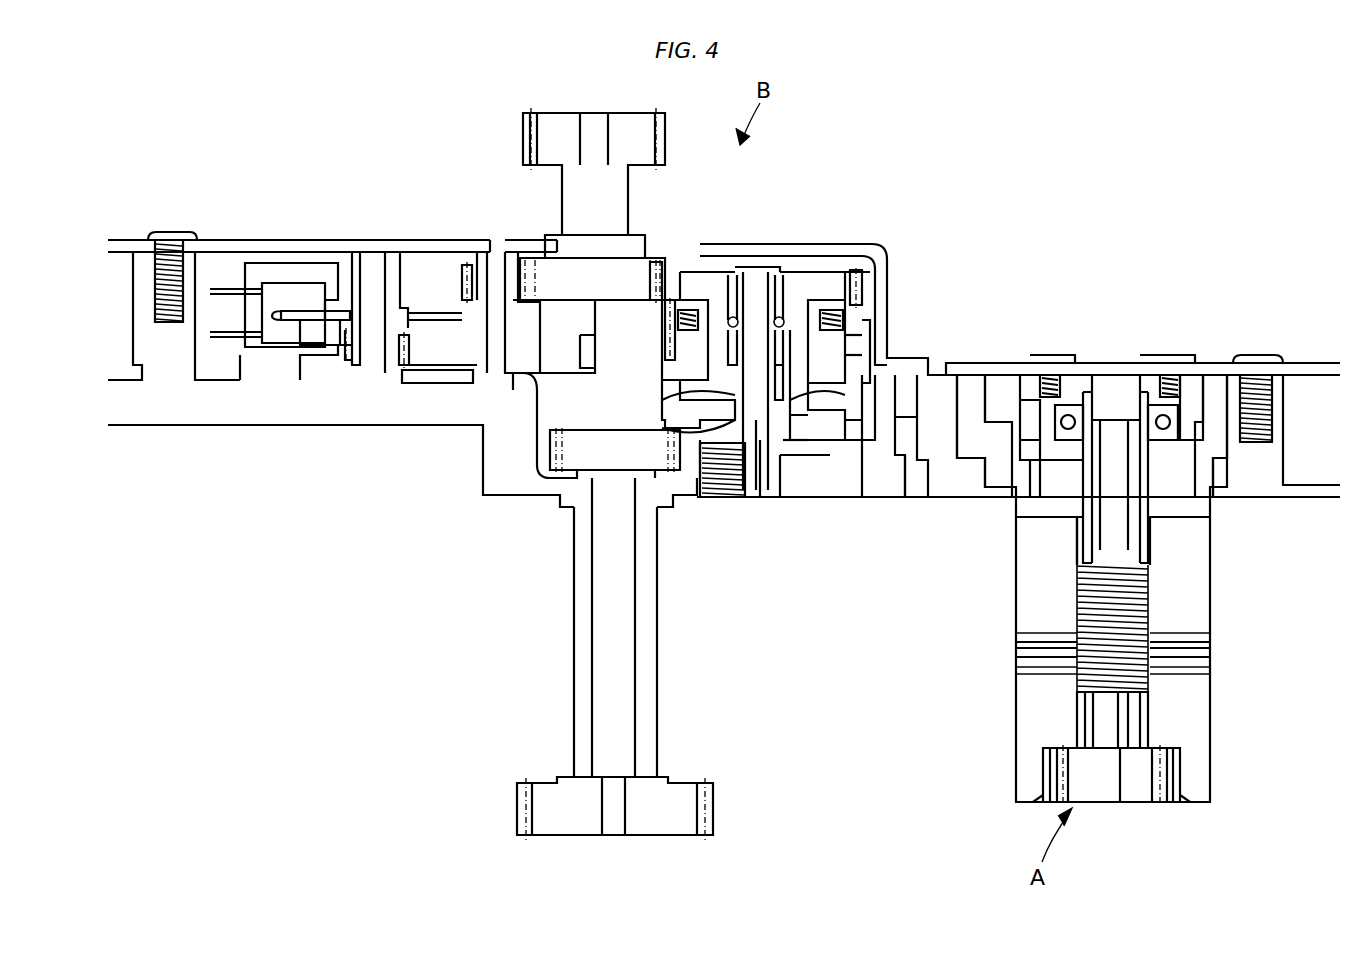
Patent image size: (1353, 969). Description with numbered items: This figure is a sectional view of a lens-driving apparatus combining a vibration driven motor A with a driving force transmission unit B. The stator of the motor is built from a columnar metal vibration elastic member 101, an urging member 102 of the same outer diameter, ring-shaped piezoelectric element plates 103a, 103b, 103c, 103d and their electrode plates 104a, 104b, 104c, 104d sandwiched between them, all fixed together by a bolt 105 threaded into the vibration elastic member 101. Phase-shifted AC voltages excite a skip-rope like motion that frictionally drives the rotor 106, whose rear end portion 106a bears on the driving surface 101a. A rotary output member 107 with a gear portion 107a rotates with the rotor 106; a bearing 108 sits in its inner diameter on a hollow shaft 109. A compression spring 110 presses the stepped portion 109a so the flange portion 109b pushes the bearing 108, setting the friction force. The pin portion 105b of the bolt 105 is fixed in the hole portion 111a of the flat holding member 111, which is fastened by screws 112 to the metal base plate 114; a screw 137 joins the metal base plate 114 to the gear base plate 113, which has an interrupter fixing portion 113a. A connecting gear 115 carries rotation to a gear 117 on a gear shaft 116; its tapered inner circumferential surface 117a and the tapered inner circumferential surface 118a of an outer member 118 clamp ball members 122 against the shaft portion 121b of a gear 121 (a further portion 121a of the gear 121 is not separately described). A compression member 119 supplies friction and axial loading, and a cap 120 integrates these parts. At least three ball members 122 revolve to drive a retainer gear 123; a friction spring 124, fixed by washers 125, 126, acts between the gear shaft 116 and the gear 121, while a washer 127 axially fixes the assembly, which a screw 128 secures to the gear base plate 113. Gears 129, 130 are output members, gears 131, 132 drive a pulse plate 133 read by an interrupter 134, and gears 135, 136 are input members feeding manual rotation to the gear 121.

The vibration elastic member 101 is at (1030, 610).
The driving surface 101a is at (1195, 500).
The urging member 102 is at (1030, 745).
The piezoelectric element plate 103a is at (1016, 642).
The piezoelectric element plate 103b is at (1016, 650).
The piezoelectric element plate 103c is at (1016, 660).
The piezoelectric element plate 103d is at (1016, 670).
The electrode plate 104a is at (1210, 642).
The electrode plate 104b is at (1210, 650).
The electrode plate 104c is at (1210, 658).
The electrode plate 104d is at (1210, 668).
The bolt 105 is at (1135, 792).
The pin portion 105b is at (1110, 385).
The rotor 106 is at (1025, 455).
The rear end portion 106a is at (1044, 500).
The rotary output member 107 is at (1045, 398).
The gear portion 107a is at (1035, 420).
The bearing 108 is at (1165, 428).
The hollow shaft 109 is at (1145, 505).
The stepped portion 109a is at (1077, 520).
The flange portion 109b is at (1188, 380).
The compression spring 110 is at (1116, 385).
The holding member 111 is at (1085, 400).
The hole portion 111a is at (1120, 405).
The screws 112 is at (1050, 385).
The gear base plate 113 is at (957, 498).
The interrupter fixing portion 113a is at (296, 362).
The metal base plate 114 is at (908, 365).
The connecting gear 115 is at (905, 462).
The gear shaft 116 is at (808, 470).
The gear 117 is at (846, 412).
The tapered inner circumferential surface 117a is at (800, 470).
The outer member 118 is at (878, 300).
The tapered inner circumferential surface 118a is at (866, 352).
The compression member 119 is at (832, 330).
The cap 120 is at (860, 292).
The gear 121 is at (835, 470).
The slider rod 121a is at (766, 450).
The shaft portion 121b is at (700, 416).
The ball members 122 is at (702, 405).
The retainer gear 123 is at (760, 292).
The friction spring 124 is at (820, 310).
The washer 125 is at (726, 322).
The washer 126 is at (735, 330).
The washer 127 is at (780, 300).
The screw 128 is at (712, 508).
The gear 129 is at (552, 280).
The gear 130 is at (545, 148).
The gear 131 is at (465, 290).
The gear 132 is at (356, 300).
The pulse plate 133 is at (325, 388).
The interrupter 134 is at (300, 282).
The gear 135 is at (576, 452).
The gear 136 is at (545, 808).
The screw 137 is at (170, 232).